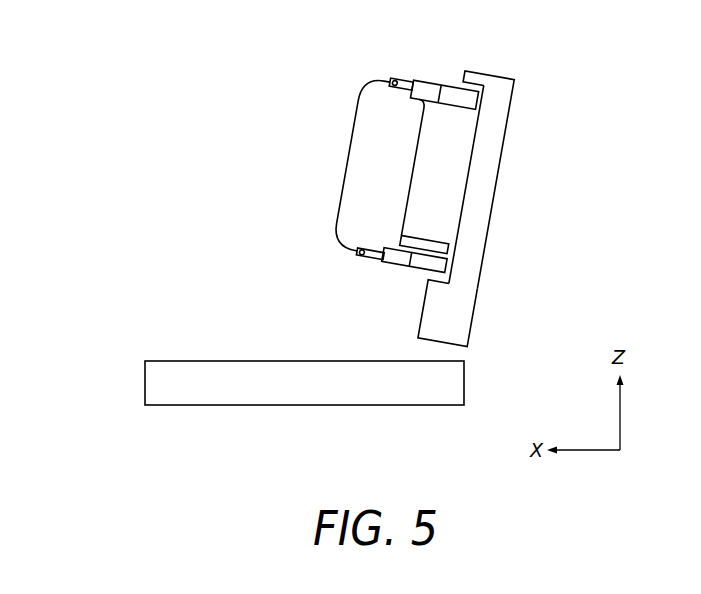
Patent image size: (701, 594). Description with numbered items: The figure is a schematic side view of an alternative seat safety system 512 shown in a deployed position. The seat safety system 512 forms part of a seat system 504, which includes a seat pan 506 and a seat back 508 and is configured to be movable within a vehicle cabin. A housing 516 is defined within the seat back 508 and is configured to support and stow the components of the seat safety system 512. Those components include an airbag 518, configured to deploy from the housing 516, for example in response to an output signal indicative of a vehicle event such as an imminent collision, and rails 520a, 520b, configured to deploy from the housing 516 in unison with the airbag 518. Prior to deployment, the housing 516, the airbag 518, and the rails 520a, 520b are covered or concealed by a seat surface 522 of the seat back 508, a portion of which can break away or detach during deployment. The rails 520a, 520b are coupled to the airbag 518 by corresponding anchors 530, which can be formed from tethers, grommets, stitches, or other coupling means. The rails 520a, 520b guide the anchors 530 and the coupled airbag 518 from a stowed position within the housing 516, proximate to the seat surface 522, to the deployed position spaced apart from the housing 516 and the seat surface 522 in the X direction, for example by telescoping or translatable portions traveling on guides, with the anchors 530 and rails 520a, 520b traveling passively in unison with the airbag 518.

The seat system 504 is at (173, 80).
The seat pan 506 is at (145, 373).
The seat back 508 is at (515, 78).
The seat safety system 512 is at (351, 75).
The housing 516 is at (471, 167).
The airbag 518 is at (342, 178).
The rail 520a is at (449, 80).
The rail 520b is at (400, 267).
The seat surface 522 is at (420, 322).
The anchors 530 is at (396, 80).